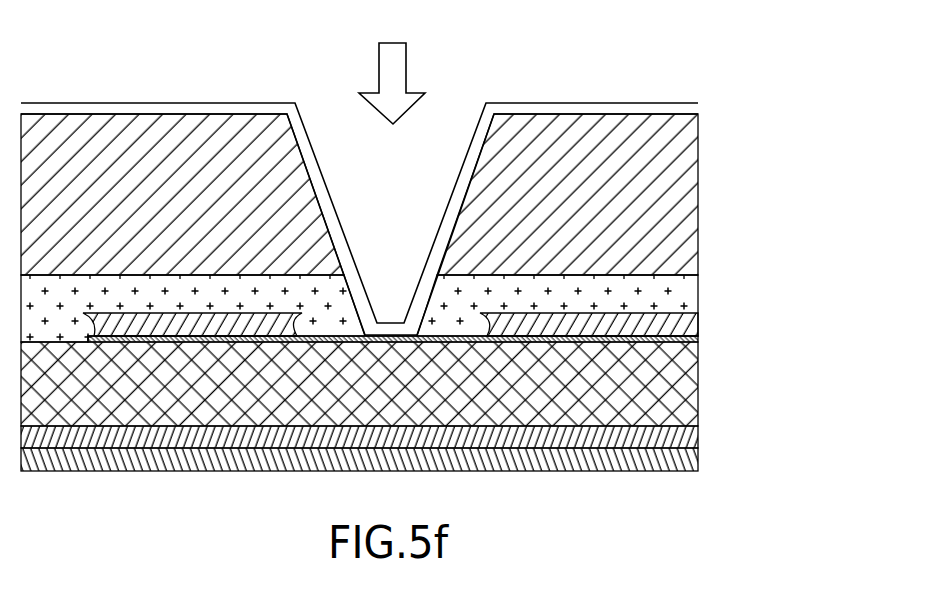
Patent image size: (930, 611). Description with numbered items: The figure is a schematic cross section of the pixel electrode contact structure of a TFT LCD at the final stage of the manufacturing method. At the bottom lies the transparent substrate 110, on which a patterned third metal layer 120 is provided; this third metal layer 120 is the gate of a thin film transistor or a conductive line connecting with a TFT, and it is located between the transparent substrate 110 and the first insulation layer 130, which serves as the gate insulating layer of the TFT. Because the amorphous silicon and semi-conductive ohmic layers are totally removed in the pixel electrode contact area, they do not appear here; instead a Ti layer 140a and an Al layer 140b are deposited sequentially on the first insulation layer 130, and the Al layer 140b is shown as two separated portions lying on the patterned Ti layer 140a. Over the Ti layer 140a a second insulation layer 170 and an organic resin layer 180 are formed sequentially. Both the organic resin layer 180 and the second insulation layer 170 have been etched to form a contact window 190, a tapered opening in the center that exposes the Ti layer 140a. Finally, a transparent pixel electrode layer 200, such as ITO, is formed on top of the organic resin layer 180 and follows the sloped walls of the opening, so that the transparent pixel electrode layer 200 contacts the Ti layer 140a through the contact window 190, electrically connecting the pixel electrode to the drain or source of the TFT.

The transparent substrate 110 is at (698, 464).
The third metal layer 120 is at (698, 433).
The first insulation layer 130 is at (686, 388).
The Ti layer 140a is at (698, 338).
The Al layer 140b is at (698, 321).
The second insulation layer 170 is at (688, 293).
The organic resin layer 180 is at (698, 176).
The contact window 190 is at (452, 134).
The transparent pixel electrode layer 200 is at (698, 105).